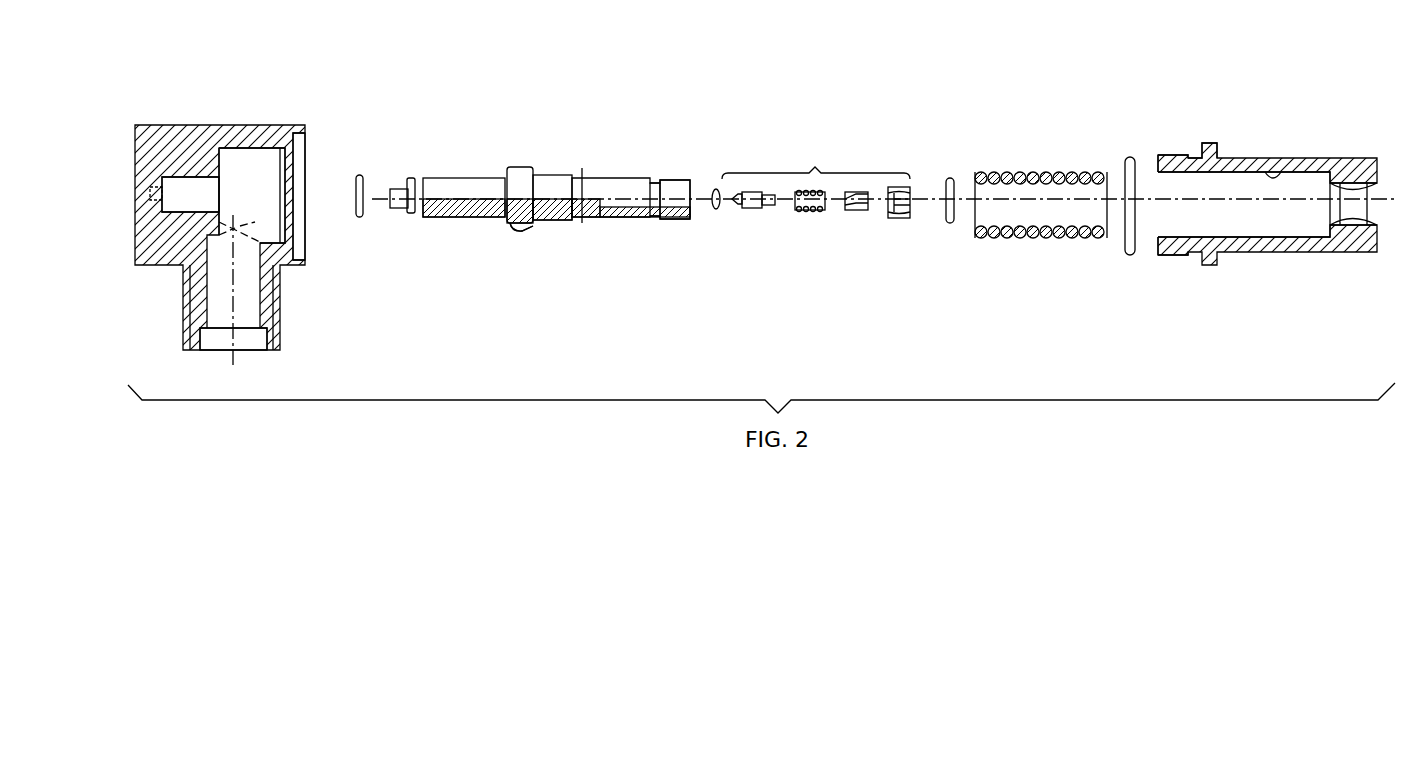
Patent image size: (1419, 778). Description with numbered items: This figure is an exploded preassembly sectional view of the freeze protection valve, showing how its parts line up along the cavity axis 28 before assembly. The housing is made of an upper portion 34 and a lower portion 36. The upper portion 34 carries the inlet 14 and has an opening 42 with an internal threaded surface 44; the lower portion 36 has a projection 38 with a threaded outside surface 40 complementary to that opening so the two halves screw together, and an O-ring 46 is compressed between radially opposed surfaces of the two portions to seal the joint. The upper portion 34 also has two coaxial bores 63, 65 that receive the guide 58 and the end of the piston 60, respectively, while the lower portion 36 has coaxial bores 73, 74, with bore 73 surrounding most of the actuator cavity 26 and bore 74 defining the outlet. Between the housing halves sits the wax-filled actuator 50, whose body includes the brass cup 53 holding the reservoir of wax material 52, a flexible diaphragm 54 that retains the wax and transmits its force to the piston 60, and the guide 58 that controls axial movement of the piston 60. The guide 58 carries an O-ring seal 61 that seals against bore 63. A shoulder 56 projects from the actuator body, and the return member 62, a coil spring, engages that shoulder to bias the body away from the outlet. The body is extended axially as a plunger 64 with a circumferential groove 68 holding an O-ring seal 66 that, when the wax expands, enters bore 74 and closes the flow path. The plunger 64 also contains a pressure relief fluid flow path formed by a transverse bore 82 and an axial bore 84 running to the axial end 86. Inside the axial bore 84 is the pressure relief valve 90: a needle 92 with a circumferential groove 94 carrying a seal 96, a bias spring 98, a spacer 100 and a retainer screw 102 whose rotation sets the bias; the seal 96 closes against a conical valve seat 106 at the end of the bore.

The inlet 14 is at (255, 342).
The actuator cavity 26 is at (238, 197).
The cavity axis 28 is at (1235, 196).
The upper housing portion 34 is at (172, 125).
The lower housing portion 36 is at (1222, 260).
The projection 38 is at (1178, 155).
The threaded outside surface 40 is at (1173, 255).
The opening 42 is at (335, 160).
The internal threaded surface 44 is at (300, 152).
The O-ring 46 is at (1130, 256).
The wax-filled actuator 50 is at (519, 235).
The wax material 52 is at (555, 217).
The cup 53 is at (553, 182).
The flexible diaphragm 54 is at (487, 219).
The shoulder 56 is at (528, 233).
The guide 58 is at (463, 188).
The piston 60 is at (398, 209).
The O-ring seal 61 is at (360, 220).
The return member 62 is at (1045, 241).
The bore 63 is at (190, 178).
The plunger 64 is at (636, 187).
The bore 65 is at (155, 200).
The O-ring seal 66 is at (950, 225).
The circumferential groove 68 is at (411, 177).
The bore 73 is at (1273, 177).
The bore 74 is at (1362, 165).
The transverse bore 82 is at (584, 221).
The axial bore 84 is at (612, 209).
The axial end 86 is at (692, 185).
The pressure relief valve 90 is at (816, 162).
The needle 92 is at (750, 211).
The circumferential groove 94 is at (736, 206).
The seal 96 is at (716, 211).
The bias spring 98 is at (808, 213).
The spacer 100 is at (856, 213).
The retainer screw 102 is at (899, 219).
The conical valve seat 106 is at (583, 170).